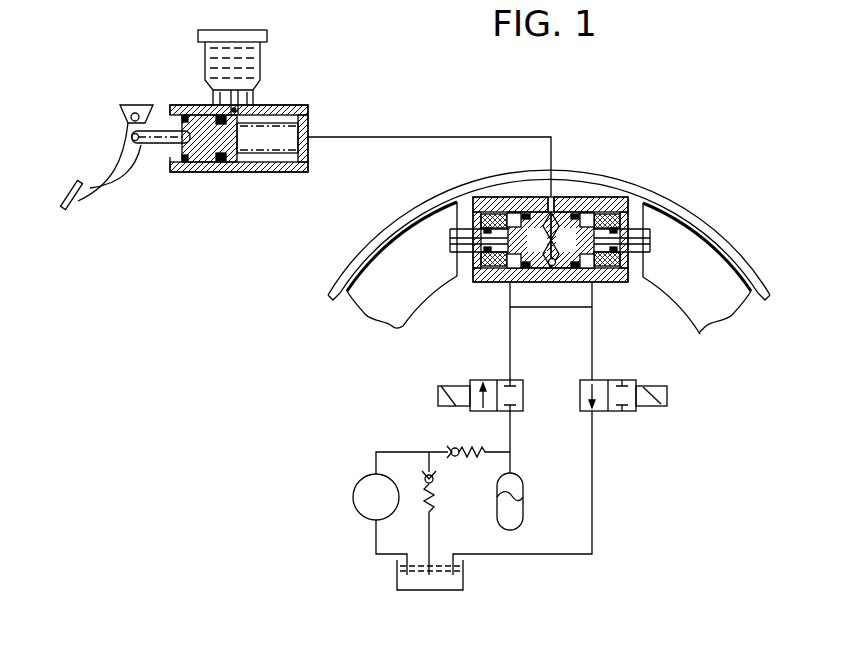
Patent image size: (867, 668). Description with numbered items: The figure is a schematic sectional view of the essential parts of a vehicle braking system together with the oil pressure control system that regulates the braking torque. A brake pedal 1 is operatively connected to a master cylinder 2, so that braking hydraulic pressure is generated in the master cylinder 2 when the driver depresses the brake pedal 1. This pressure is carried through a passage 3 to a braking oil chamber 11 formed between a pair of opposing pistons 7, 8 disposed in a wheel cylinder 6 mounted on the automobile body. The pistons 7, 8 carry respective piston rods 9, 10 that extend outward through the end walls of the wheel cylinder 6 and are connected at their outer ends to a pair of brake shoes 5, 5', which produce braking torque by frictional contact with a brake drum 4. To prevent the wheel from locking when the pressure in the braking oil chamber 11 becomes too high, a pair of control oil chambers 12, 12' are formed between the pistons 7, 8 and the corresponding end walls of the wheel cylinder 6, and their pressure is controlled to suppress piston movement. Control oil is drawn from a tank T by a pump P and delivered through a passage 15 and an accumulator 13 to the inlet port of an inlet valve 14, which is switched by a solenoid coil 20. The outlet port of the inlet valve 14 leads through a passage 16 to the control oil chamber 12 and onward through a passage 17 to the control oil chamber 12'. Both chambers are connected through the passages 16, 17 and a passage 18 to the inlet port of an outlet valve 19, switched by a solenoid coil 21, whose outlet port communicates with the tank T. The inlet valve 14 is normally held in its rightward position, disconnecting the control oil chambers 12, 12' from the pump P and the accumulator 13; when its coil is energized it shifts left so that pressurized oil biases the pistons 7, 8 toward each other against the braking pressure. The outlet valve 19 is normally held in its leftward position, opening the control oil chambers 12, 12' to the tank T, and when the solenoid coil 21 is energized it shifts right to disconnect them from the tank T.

The brake pedal 1 is at (64, 193).
The master cylinder 2 is at (287, 104).
The passage 3 is at (418, 136).
The brake drum 4 is at (428, 199).
The brake shoe 5 is at (402, 270).
The brake shoe 5' is at (697, 270).
The wheel cylinder 6 is at (601, 190).
The piston 7 is at (529, 240).
The piston 8 is at (572, 240).
The piston rod 9 is at (463, 253).
The piston rod 10 is at (637, 253).
The braking oil chamber 11 is at (553, 266).
The control oil chamber 12 is at (509, 204).
The control oil chamber 12' is at (589, 204).
The accumulator 13 is at (524, 487).
The inlet valve 14 is at (478, 380).
The passage 15 is at (398, 452).
The passage 16 is at (510, 329).
The passage 17 is at (543, 308).
The passage 18 is at (592, 330).
The outlet valve 19 is at (630, 380).
The solenoid coil 20 is at (439, 386).
The solenoid coil 21 is at (660, 387).
The pump P is at (353, 497).
The tank T is at (463, 571).